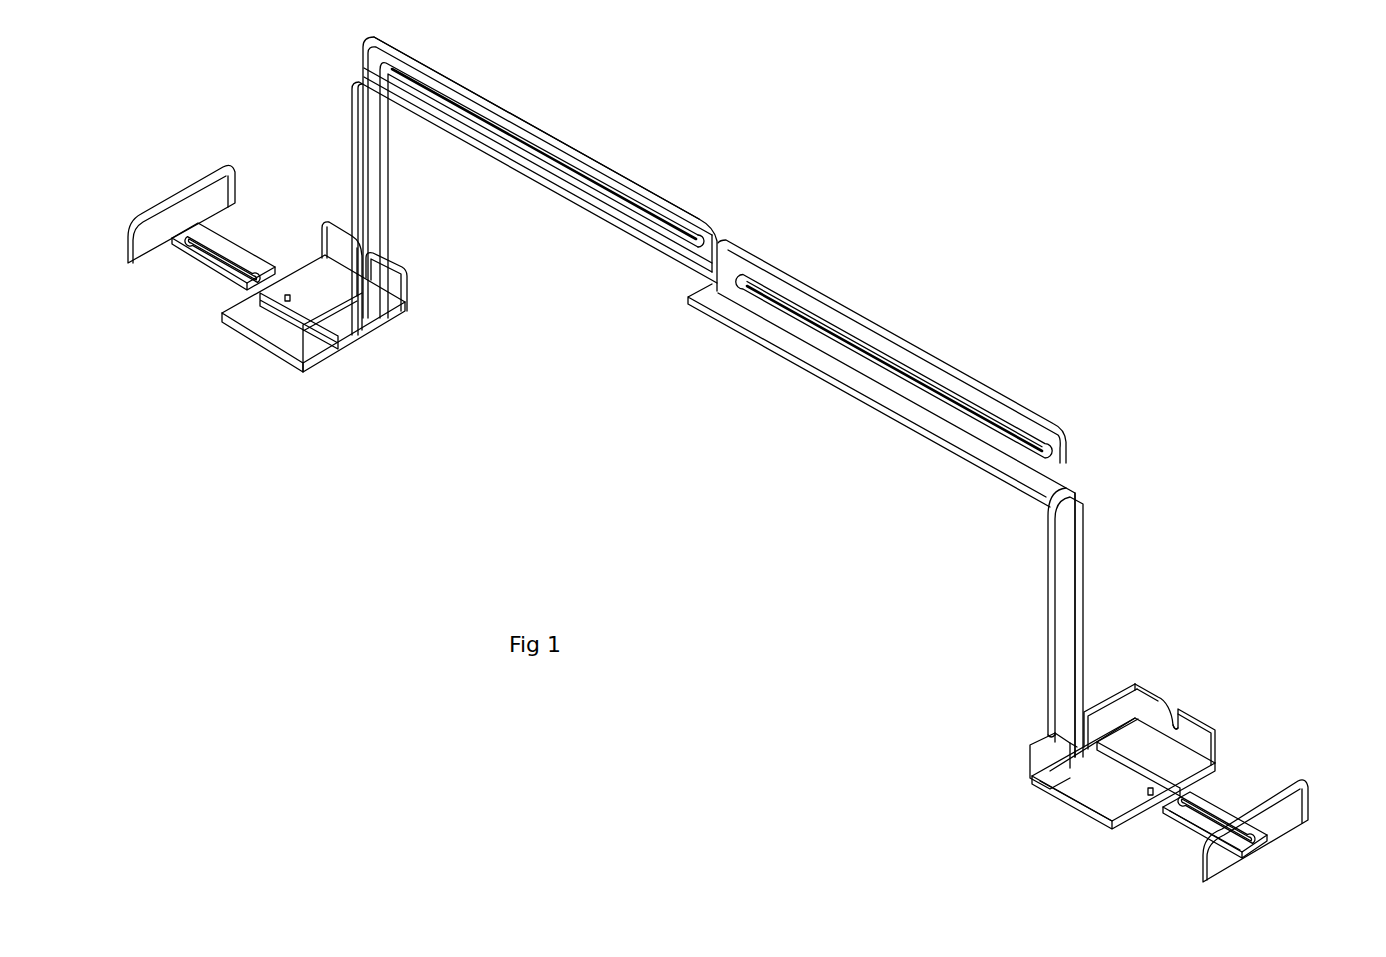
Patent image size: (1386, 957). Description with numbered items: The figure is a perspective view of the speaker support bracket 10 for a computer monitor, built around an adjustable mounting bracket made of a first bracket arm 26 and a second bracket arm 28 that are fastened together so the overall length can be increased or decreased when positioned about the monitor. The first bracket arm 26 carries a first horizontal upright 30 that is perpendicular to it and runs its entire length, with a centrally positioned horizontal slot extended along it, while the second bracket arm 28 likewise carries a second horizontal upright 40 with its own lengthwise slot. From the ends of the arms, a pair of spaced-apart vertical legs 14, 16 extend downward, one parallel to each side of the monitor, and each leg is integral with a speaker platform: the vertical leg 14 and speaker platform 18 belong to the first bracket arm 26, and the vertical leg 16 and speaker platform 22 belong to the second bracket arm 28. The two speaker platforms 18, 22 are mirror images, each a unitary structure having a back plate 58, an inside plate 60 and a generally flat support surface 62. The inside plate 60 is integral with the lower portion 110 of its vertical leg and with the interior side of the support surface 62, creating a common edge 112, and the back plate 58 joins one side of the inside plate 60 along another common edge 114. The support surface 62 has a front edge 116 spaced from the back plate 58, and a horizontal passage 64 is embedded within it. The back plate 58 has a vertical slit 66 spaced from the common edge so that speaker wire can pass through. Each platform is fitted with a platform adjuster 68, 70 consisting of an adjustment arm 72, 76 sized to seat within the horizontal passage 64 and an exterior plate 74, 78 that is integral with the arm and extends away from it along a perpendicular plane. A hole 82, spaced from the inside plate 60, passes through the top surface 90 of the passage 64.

The frame assembly 10 is at (703, 187).
The vertical leg 14 is at (375, 178).
The vertical leg 16 is at (1068, 587).
The speaker platform 18 is at (307, 301).
The speaker platform 22 is at (1118, 726).
The first bracket arm 26 is at (565, 184).
The second bracket arm 28 is at (882, 385).
The first horizontal upright 30 is at (555, 122).
The second horizontal upright 40 is at (920, 348).
The back plate 58 is at (1180, 683).
The inside plate 60 is at (1112, 692).
The support surface 62 is at (1090, 795).
The horizontal passage 64 is at (1142, 763).
The vertical slit 66 is at (1178, 717).
The platform adjuster 68 is at (175, 209).
The platform adjuster 70 is at (1266, 800).
The adjustment arm 72 is at (212, 265).
The exterior plate 74 is at (206, 190).
The adjustment arm 76 is at (1232, 807).
The exterior plate 78 is at (1308, 797).
The hole 82 is at (283, 293).
The top surface 90 is at (344, 327).
The lower portion 110 is at (1068, 742).
The common edge 112 is at (381, 327).
The common edge 114 is at (1133, 685).
The front edge 116 is at (255, 333).